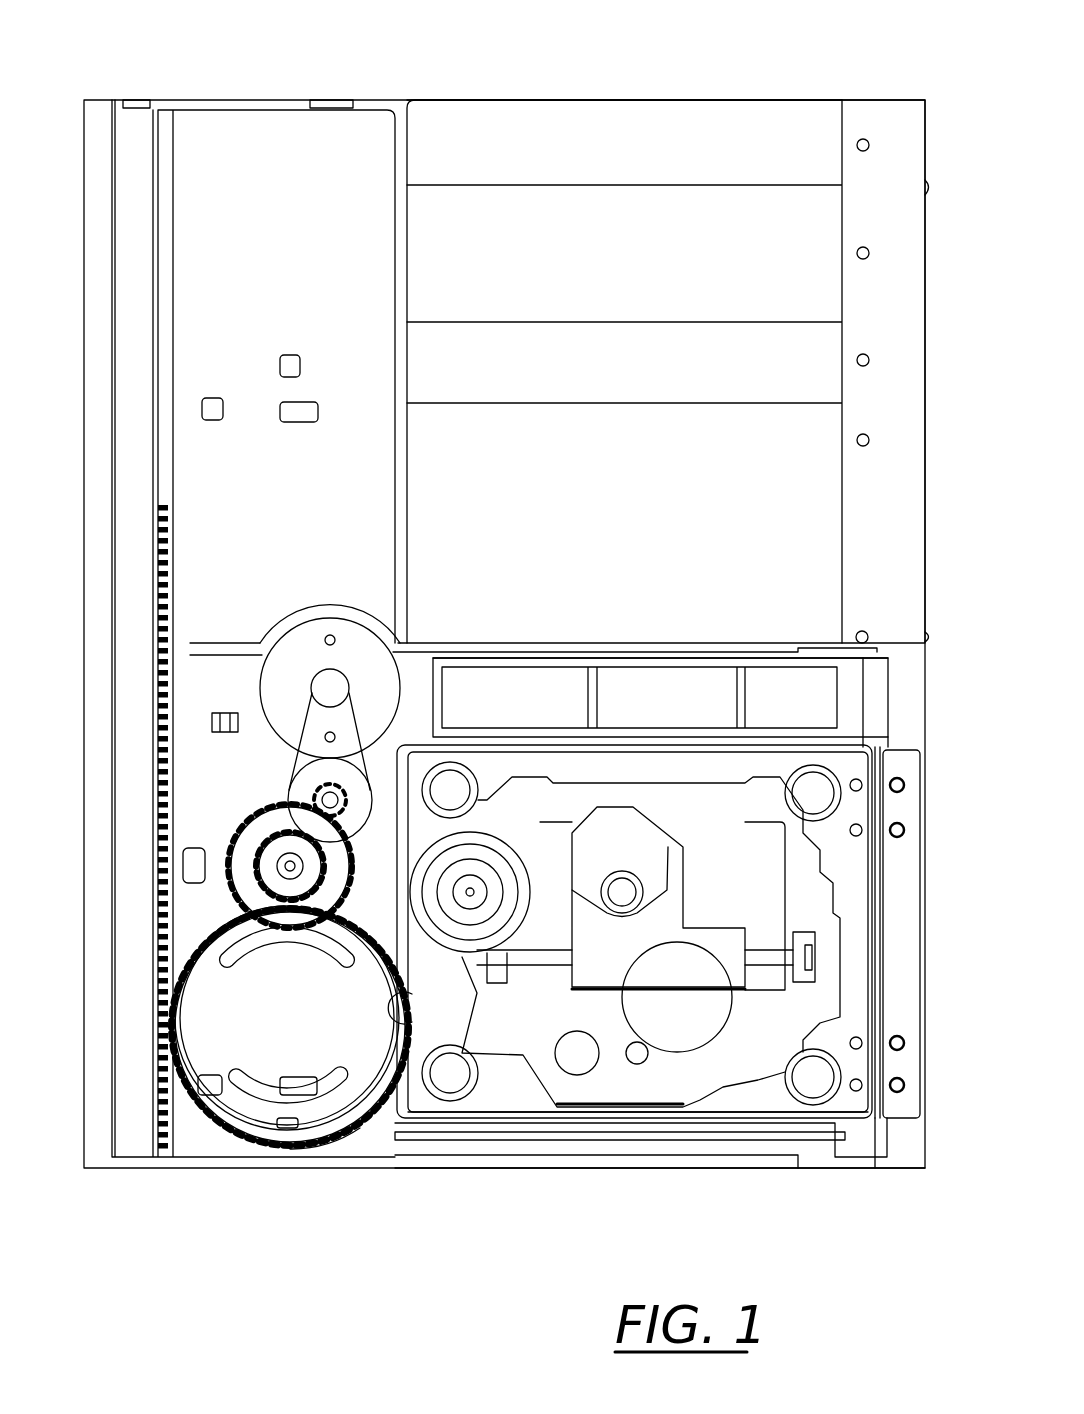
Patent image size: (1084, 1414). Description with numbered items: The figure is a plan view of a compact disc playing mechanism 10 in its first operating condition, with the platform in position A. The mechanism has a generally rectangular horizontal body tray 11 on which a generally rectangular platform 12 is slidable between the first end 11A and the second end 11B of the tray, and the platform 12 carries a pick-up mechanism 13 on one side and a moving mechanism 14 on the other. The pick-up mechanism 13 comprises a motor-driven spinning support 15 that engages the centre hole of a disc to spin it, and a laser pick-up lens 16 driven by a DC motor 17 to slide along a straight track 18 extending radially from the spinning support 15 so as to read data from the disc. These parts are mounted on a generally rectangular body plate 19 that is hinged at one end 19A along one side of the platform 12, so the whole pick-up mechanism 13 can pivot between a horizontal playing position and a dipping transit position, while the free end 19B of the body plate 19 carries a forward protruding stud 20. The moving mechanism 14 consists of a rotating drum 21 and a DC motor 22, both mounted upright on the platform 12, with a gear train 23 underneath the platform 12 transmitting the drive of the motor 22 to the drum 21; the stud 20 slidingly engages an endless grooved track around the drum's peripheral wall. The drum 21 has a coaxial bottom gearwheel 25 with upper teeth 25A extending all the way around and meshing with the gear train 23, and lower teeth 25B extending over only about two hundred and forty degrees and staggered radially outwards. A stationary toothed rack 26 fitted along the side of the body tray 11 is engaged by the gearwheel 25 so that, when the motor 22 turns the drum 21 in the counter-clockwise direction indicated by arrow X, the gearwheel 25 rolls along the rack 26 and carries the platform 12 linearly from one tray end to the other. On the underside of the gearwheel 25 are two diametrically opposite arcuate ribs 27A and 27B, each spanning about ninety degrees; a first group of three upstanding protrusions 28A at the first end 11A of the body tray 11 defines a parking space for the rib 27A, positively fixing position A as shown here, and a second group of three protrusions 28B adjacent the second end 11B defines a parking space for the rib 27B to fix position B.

The compact disc playing mechanism 10 is at (722, 54).
The body tray 11 is at (762, 241).
The first end of body tray 11A is at (525, 1168).
The second end of body tray 11B is at (497, 100).
The platform 12 is at (537, 643).
The pick-up mechanism 13 is at (627, 772).
The moving mechanism 14 is at (255, 680).
The spinning support 15 is at (497, 843).
The laser pick-up lens 16 is at (625, 890).
The DC motor 17 is at (678, 1077).
The straight track 18 is at (770, 955).
The body plate 19 is at (692, 768).
The hinged end of body plate 19A is at (862, 1110).
The free end of body plate 19B is at (427, 1112).
The stud 20 is at (412, 993).
The rotating drum 21 is at (195, 1033).
The DC motor 22 is at (355, 635).
The gear train 23 is at (280, 792).
The gearwheel 25 is at (338, 1150).
The upper teeth 25A is at (232, 1125).
The lower teeth 25B is at (363, 1127).
The toothed rack 26 is at (163, 560).
The arcuate rib 27A is at (342, 1088).
The arcuate rib 27B is at (308, 937).
The upstanding protrusions 28A is at (293, 1087).
The upstanding protrusions 28B is at (288, 360).
The arrow X is at (190, 903).